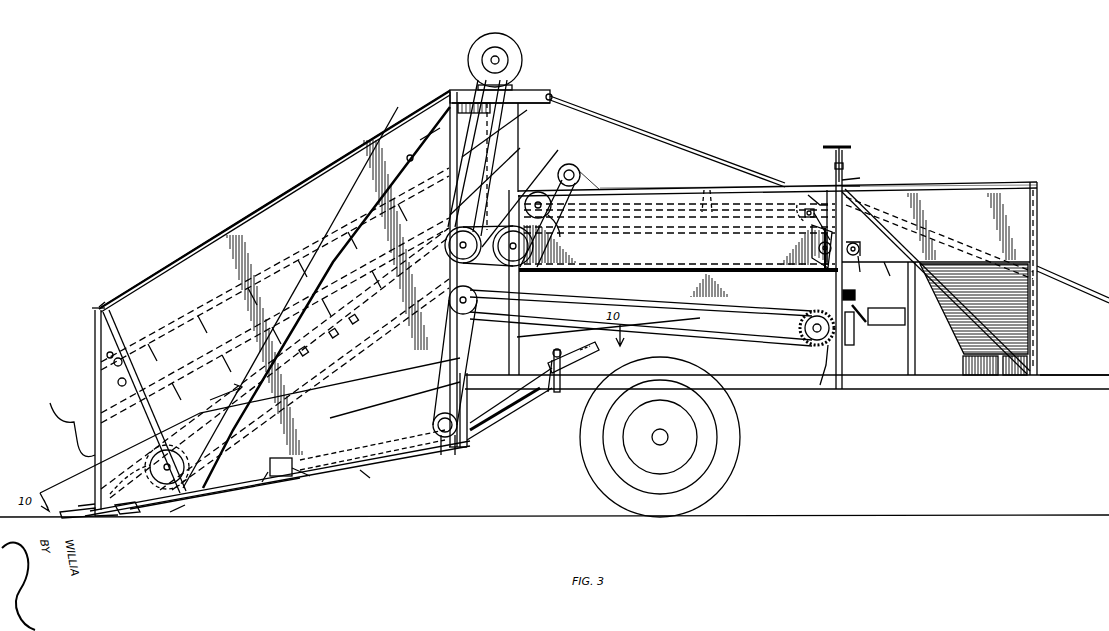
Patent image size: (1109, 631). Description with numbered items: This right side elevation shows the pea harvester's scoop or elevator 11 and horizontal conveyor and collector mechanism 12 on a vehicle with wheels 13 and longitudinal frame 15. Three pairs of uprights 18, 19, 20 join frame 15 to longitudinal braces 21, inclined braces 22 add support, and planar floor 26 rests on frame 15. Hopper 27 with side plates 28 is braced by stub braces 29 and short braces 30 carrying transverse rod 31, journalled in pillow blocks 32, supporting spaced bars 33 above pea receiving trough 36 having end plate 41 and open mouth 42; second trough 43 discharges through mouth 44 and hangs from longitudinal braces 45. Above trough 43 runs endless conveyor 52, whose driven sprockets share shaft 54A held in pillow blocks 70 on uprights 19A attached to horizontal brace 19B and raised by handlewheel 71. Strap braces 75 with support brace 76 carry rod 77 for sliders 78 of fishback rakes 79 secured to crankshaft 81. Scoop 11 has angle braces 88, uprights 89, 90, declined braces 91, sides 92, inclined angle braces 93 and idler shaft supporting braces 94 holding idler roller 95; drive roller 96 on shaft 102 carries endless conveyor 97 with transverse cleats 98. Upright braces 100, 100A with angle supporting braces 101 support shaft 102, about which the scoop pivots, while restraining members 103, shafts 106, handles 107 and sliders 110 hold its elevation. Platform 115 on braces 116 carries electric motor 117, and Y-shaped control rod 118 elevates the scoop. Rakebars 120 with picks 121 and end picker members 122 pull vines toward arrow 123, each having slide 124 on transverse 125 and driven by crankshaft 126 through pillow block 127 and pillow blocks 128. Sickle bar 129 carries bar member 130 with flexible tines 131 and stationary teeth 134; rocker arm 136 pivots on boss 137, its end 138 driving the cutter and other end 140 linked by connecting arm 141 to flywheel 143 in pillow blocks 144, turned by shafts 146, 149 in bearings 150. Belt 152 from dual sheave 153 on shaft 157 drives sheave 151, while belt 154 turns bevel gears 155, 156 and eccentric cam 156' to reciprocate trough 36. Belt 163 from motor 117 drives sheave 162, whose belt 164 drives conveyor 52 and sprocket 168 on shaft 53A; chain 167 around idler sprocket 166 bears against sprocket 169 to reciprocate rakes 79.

The scoop or elevator 11 is at (262, 197).
The horizontal conveyor and collector mechanism 12 is at (687, 170).
The wheels 13 is at (730, 436).
The longitudinal frame 15 is at (1079, 385).
The uprights 18 is at (1038, 186).
The uprights 19 is at (843, 361).
The uprights 19A is at (846, 182).
The horizontal brace 19B is at (846, 165).
The uprights 20 is at (515, 333).
The longitudinal braces 21 is at (753, 181).
The inclined braces 22 is at (1003, 389).
The planar floor 26 is at (1088, 374).
The hopper 27 is at (982, 378).
The side plates 28 is at (958, 196).
The stub braces 29 is at (912, 389).
The horizontal short braces 30 is at (889, 265).
The transverse rod 31 is at (860, 262).
The pillow blocks 32 is at (854, 242).
The bars 33 is at (878, 236).
The pea receiving trough 36 is at (895, 328).
The end plate 41 is at (886, 310).
The open mouth 42 is at (864, 322).
The second trough 43 is at (682, 290).
The mouth 44 is at (856, 294).
The longitudinal braces 45 is at (703, 263).
The endless conveyor 52 is at (670, 241).
The shaft 53A is at (518, 247).
The common shaft 54A is at (819, 248).
The pillow blocks 70 is at (816, 268).
The handlewheel 71 is at (843, 147).
The strap braces 75 is at (827, 190).
The support brace 76 is at (804, 213).
The rod 77 is at (818, 190).
The sliders 78 is at (797, 204).
The fishback rakes 79 is at (705, 190).
The crankshaft 81 is at (561, 237).
The angle braces 88 is at (360, 470).
The uprights 89 is at (95, 333).
The uprights 90 is at (456, 90).
The declined braces 91 is at (370, 150).
The sides 92 is at (330, 182).
The inclined angle braces 93 is at (342, 260).
The idler shaft supporting braces 94 is at (112, 302).
The idler roller 95 is at (178, 460).
The drive roller 96 is at (447, 238).
The endless conveyor 97 is at (340, 340).
The transverse cleats 98 is at (316, 356).
The upright braces 100 is at (422, 348).
The upright braces 100A is at (470, 445).
The angle supporting braces 101 is at (495, 431).
The shaft 102 is at (447, 244).
The restraining members 103 is at (508, 418).
The shafts 106 is at (561, 385).
The handles 107 is at (553, 394).
The slider 110 is at (552, 362).
The platform 115 is at (538, 90).
The braces 116 is at (525, 107).
The electric motor 117 is at (509, 44).
The Y-shaped control rod 118 is at (658, 128).
The rakebars 120 is at (178, 365).
The depending picks 121 is at (218, 343).
The end picker members 122 is at (77, 447).
The arrow 123 is at (212, 398).
The slide 124 is at (402, 180).
The transverse member 125 is at (411, 154).
The crankshaft 126 is at (126, 380).
The pillow block 127 is at (118, 345).
The pillow blocks 128 is at (106, 362).
The sickle bar 129 is at (72, 514).
The bar member 130 is at (108, 518).
The flexible steel tines 131 is at (118, 492).
The stationary teeth 134 is at (86, 504).
The rocker arm 136 is at (225, 490).
The boss 137 is at (188, 507).
The end of rocker arm 138 is at (128, 513).
The other end of rocker arm 140 is at (274, 487).
The extending connecting arm 141 is at (290, 470).
The flywheel 143 is at (318, 473).
The pillow blocks 144 is at (318, 470).
The shaft 146 is at (362, 468).
The shaft 149 is at (437, 418).
The bearings 150 is at (462, 450).
The sheave 151 is at (448, 453).
The belt 152 is at (432, 388).
The dual sheave 153 is at (449, 300).
The belt 154 is at (735, 336).
The bevel gear 155 is at (815, 345).
The mating bevel gear 156 is at (822, 376).
The eccentric cam 156' is at (868, 308).
The shaft 157 is at (455, 292).
The sheave 162 is at (497, 178).
The belt 163 is at (511, 148).
The belt 164 is at (527, 183).
The idler sprocket 166 is at (580, 175).
The chain 167 is at (595, 185).
The sprocket 168 is at (530, 263).
The sprocket 169 is at (569, 164).